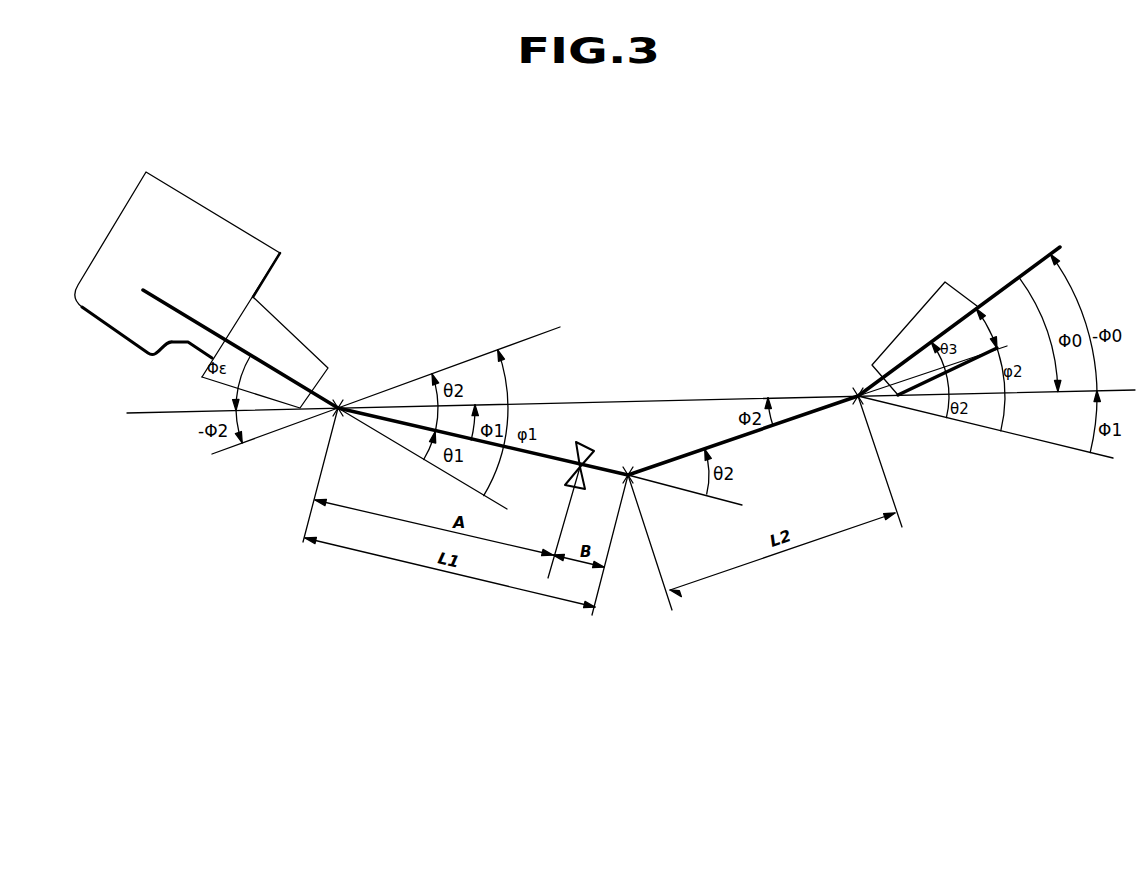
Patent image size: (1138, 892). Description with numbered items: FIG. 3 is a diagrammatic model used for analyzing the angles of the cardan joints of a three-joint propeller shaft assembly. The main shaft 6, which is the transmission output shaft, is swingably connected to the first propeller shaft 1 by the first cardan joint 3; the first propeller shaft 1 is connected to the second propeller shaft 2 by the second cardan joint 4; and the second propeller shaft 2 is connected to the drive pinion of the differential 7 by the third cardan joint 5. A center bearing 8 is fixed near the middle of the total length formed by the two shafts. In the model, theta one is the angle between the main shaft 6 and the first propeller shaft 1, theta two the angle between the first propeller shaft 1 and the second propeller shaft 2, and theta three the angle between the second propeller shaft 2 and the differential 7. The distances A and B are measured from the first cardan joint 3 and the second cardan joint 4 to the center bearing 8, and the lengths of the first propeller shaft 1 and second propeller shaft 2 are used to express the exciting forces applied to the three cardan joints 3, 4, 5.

The first propeller shaft 1 is at (548, 447).
The second propeller shaft 2 is at (800, 410).
The first cardan joint 3 is at (343, 400).
The second cardan joint 4 is at (630, 470).
The third cardan joint 5 is at (857, 392).
The main shaft 6 is at (197, 317).
The differential 7 is at (945, 330).
The center bearing 8 is at (592, 448).